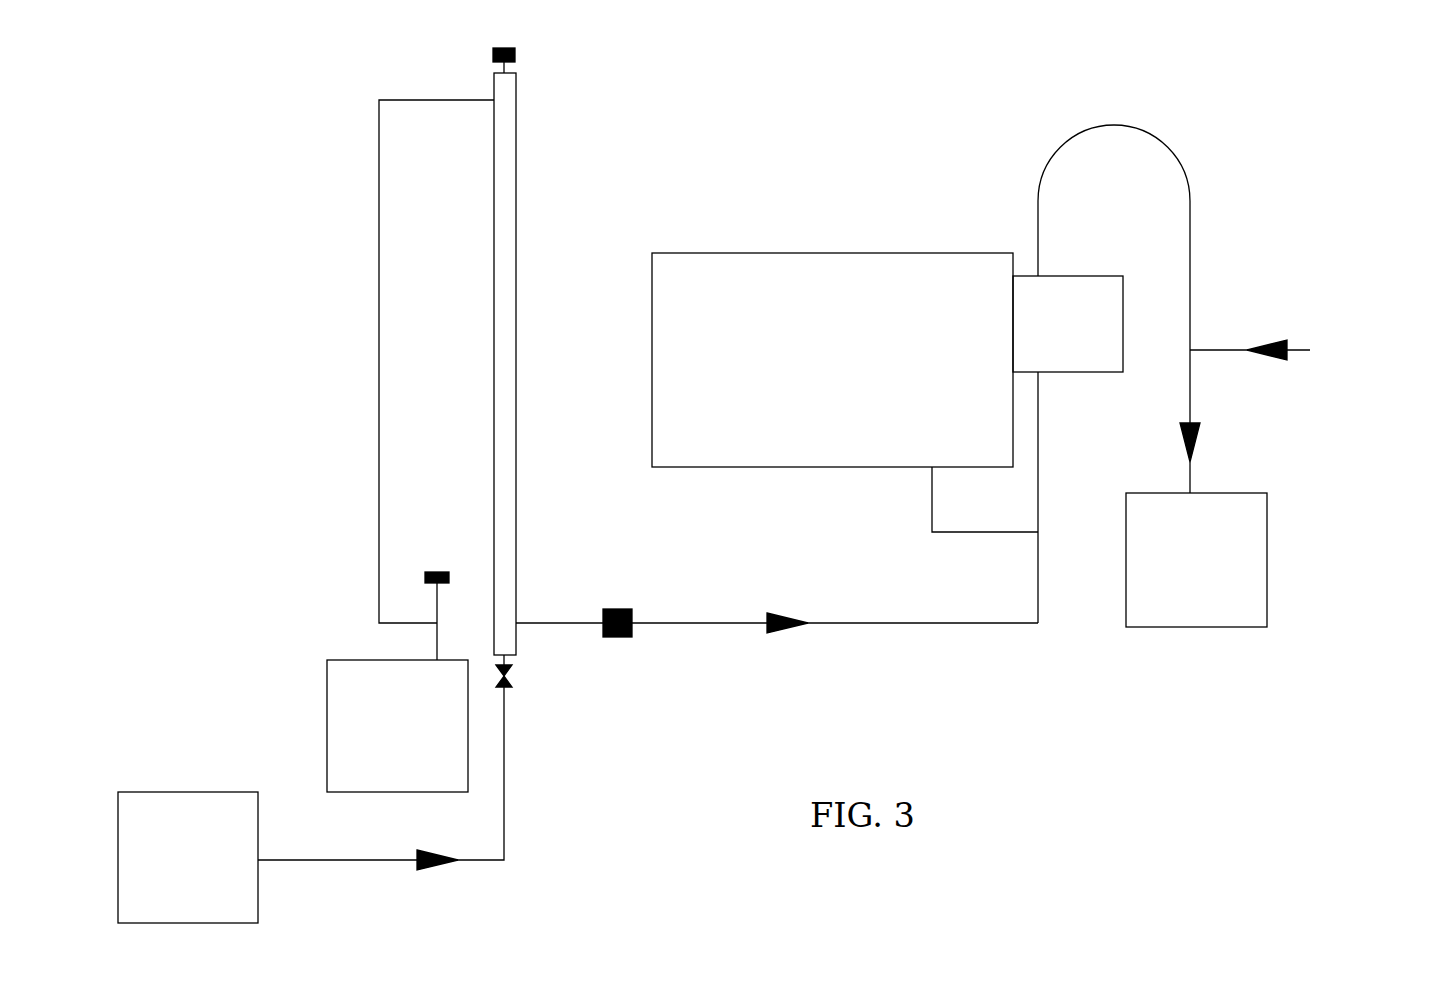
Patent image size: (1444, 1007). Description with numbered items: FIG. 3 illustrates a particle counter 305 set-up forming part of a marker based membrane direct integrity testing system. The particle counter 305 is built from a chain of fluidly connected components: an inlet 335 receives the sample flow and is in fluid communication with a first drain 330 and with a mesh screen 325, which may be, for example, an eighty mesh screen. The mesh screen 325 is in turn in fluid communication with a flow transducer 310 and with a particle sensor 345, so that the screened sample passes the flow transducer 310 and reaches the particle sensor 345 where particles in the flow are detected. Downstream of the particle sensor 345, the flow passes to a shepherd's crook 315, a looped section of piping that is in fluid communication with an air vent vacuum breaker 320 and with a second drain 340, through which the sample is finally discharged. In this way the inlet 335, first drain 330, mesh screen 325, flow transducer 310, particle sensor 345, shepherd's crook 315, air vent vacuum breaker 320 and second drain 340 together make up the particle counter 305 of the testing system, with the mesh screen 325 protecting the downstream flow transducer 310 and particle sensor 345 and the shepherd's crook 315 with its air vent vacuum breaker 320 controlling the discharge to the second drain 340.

The particle counter 305 is at (832, 360).
The flow transducer 310 is at (968, 474).
The shepherd's crook 315 is at (1119, 279).
The air vent vacuum breaker 320 is at (1304, 356).
The mesh screen 325 is at (777, 533).
The first drain 330 is at (397, 726).
The inlet 335 is at (311, 805).
The second drain 340 is at (1196, 560).
The particle sensor 345 is at (1068, 324).